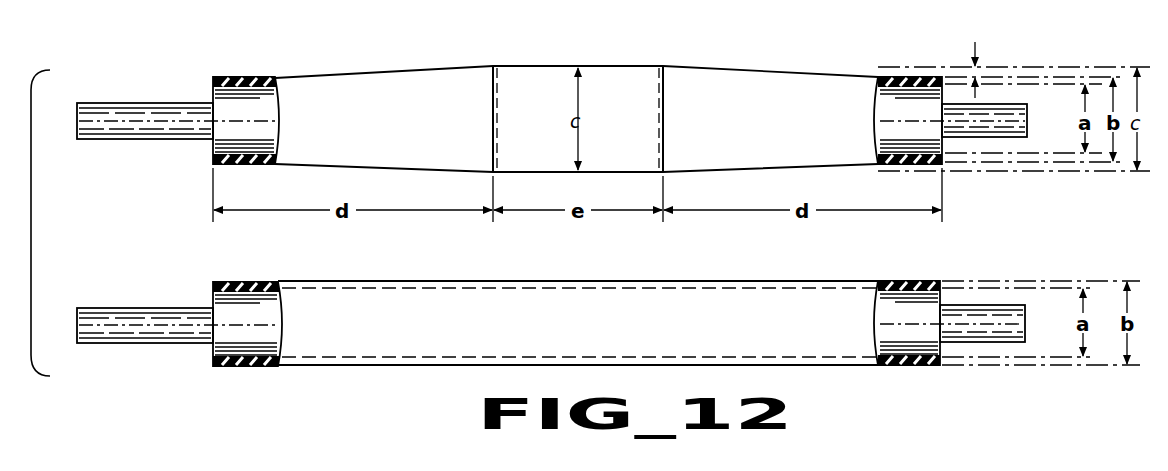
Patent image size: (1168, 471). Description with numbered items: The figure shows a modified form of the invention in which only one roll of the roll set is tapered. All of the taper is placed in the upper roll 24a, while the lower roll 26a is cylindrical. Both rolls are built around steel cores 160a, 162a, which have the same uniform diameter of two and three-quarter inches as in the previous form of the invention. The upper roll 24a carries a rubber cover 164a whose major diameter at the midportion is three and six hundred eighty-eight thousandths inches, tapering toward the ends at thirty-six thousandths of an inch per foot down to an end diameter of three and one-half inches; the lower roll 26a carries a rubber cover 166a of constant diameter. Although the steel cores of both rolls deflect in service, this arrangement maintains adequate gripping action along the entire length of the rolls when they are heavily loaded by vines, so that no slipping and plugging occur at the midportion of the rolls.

The steel core 160a is at (227, 92).
The rubber cover 164a is at (232, 78).
The upper roll 24a is at (352, 71).
The steel core 162a is at (226, 298).
The rubber cover 166a is at (258, 367).
The lower roll 26a is at (350, 365).